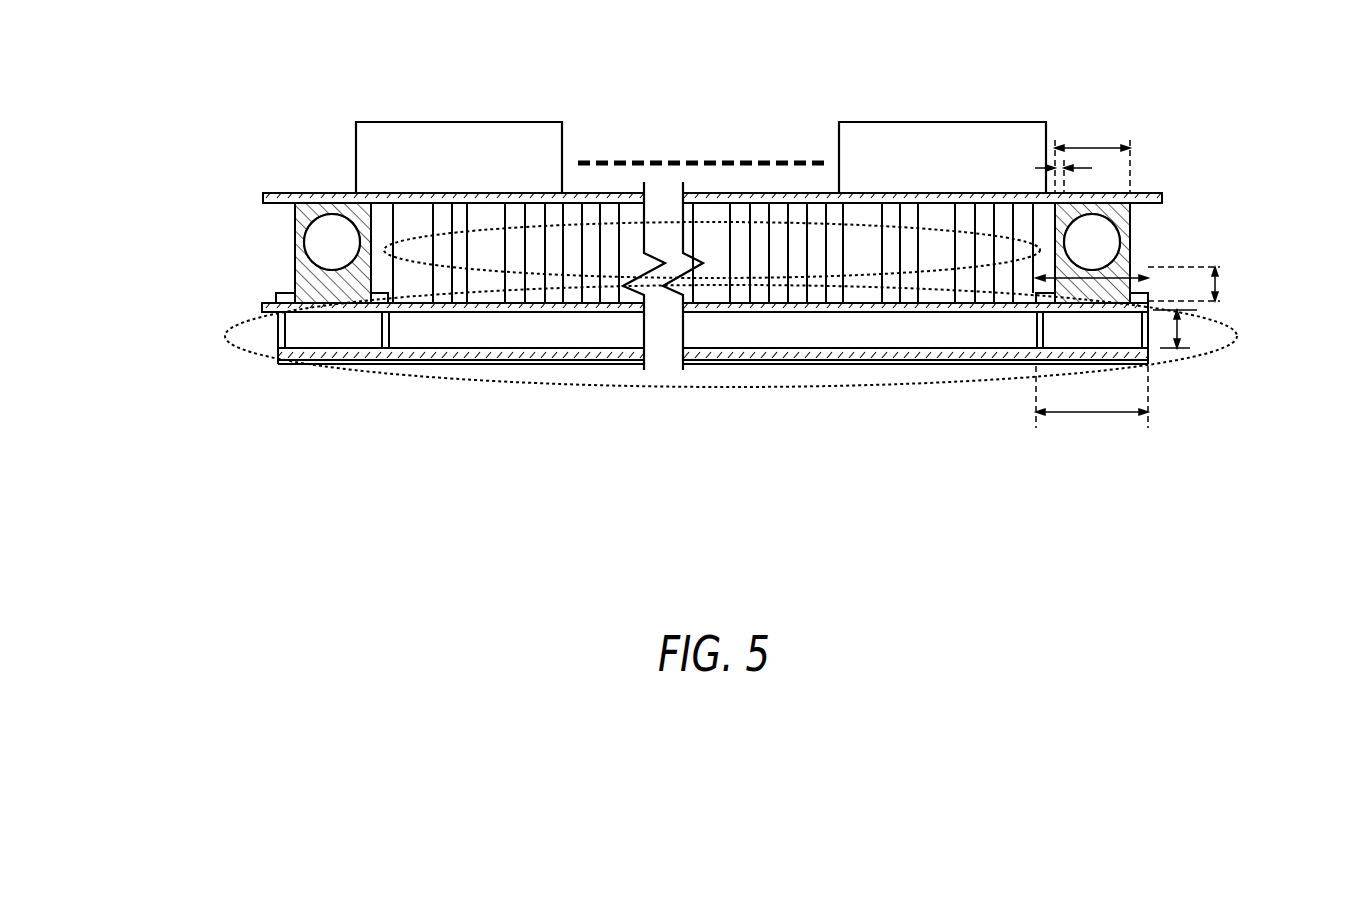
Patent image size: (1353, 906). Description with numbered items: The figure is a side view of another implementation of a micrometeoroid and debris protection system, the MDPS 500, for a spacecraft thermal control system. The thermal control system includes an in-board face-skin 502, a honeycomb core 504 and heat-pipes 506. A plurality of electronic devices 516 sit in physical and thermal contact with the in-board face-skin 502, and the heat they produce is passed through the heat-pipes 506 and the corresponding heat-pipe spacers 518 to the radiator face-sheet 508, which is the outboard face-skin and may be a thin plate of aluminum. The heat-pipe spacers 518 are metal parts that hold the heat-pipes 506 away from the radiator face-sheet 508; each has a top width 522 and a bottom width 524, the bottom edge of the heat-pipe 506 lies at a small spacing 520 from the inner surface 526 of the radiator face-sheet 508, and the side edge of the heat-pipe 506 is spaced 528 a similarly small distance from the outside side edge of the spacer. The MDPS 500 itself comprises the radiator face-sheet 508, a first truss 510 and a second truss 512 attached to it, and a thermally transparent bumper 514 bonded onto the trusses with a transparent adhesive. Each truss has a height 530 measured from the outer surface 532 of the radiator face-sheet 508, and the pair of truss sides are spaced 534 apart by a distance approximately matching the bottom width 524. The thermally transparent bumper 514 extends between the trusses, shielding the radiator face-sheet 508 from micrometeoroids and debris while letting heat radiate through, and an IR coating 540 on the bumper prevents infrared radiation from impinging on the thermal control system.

The MDPS 500 is at (1228, 343).
The in-board face-skin 502 is at (1147, 193).
The honeycomb core 504 is at (940, 270).
The heat-pipe 506 is at (316, 255).
The radiator face-sheet 508 is at (476, 313).
The first truss 510 is at (1043, 332).
The second truss 512 is at (382, 332).
The thermally transparent bumper 514 is at (420, 363).
The electronic devices 516 is at (444, 175).
The heat-pipe spacer 518 is at (310, 283).
The spacing 520 is at (1220, 280).
The top width 522 is at (1092, 148).
The bottom width 524 is at (1135, 278).
The inner surface 526 is at (557, 292).
The side spacing 528 is at (1078, 170).
The height 530 is at (1177, 330).
The outer surface 532 is at (877, 310).
The truss side spacing 534 is at (1087, 412).
The IR coating 540 is at (717, 365).